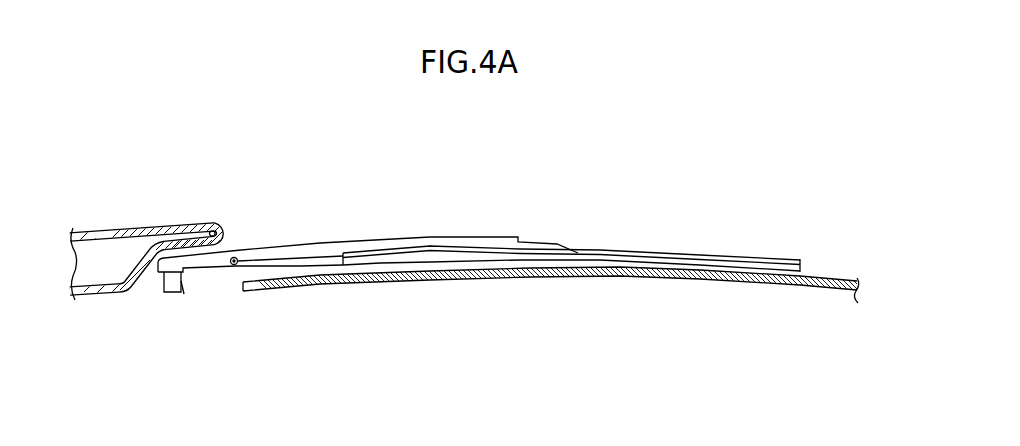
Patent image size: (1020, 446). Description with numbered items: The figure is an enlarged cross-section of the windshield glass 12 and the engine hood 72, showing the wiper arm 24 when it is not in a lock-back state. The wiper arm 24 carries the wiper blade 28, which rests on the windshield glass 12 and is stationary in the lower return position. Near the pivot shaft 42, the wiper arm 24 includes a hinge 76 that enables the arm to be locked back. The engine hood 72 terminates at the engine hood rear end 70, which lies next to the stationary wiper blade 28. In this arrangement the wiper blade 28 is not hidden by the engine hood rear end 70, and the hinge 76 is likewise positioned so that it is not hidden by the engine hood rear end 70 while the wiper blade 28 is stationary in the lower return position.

The windshield glass 12 is at (826, 291).
The wiper arm 24 is at (373, 239).
The wiper blade 28 is at (802, 270).
The pivot shaft 42 is at (161, 287).
The engine hood rear end 70 is at (226, 219).
The engine hood 72 is at (97, 216).
The hinge 76 is at (233, 266).